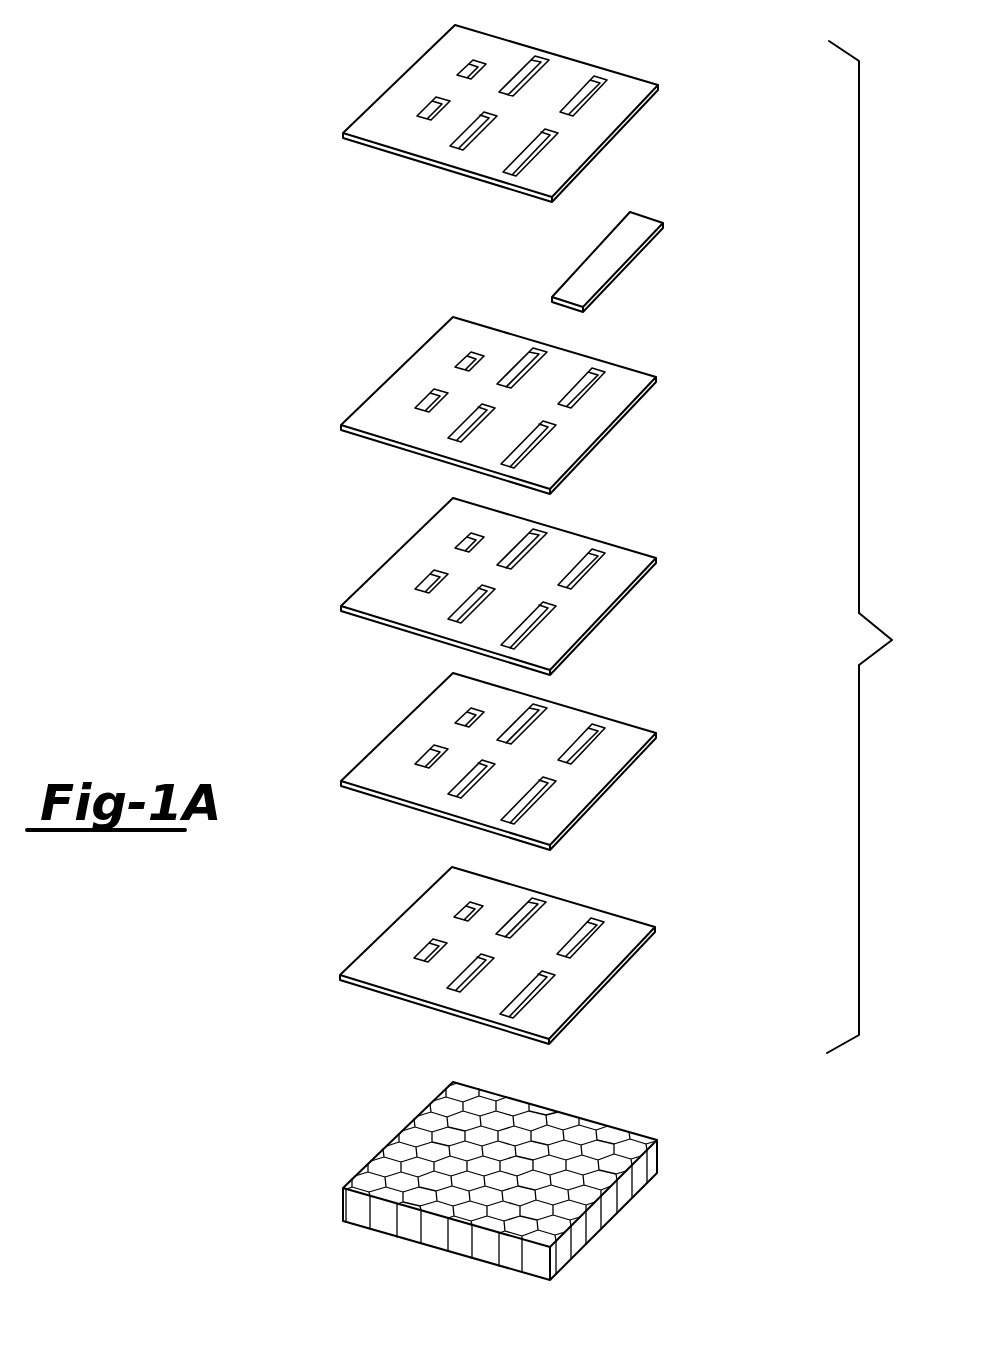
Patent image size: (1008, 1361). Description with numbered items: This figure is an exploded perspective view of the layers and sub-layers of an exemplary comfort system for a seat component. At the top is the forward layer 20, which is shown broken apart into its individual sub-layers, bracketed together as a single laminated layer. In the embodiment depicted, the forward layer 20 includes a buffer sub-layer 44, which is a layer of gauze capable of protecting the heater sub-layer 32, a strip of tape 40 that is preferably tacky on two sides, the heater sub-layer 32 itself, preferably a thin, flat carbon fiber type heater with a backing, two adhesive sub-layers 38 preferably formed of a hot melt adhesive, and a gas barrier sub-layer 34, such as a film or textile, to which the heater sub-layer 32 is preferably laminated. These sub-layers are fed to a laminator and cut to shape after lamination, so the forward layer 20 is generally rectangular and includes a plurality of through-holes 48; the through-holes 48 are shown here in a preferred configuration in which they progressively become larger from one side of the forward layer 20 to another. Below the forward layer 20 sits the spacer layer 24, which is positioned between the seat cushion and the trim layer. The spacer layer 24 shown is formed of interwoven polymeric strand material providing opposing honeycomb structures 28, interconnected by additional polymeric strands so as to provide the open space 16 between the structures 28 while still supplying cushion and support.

The forward layer 20 is at (881, 547).
The buffer sub-layer 44 is at (567, 68).
The through-holes 48 is at (430, 100).
The strip of tape 40 is at (625, 243).
The heater sub-layer 32 is at (628, 388).
The adhesive sub-layers 38 is at (632, 573).
The gas barrier sub-layer 34 is at (372, 771).
The spacer layer 24 is at (422, 1194).
The honeycomb structures 28 is at (337, 1233).
The open space 16 is at (421, 1227).